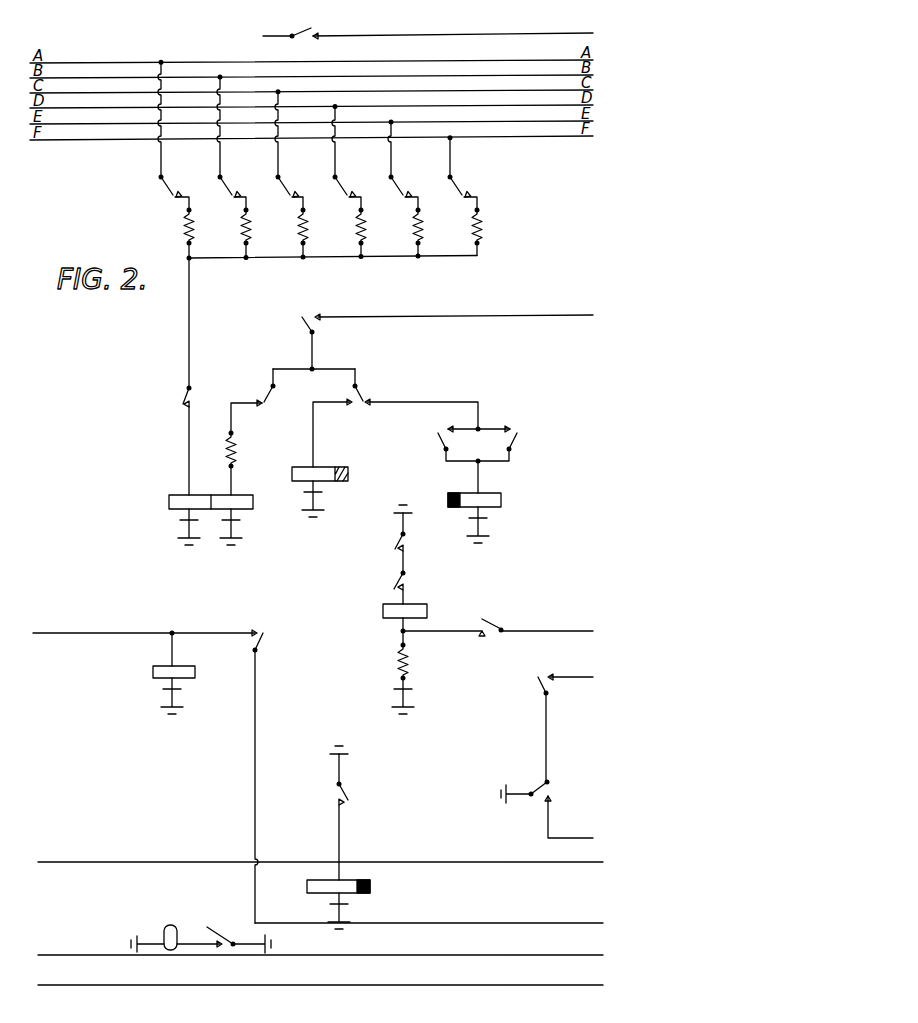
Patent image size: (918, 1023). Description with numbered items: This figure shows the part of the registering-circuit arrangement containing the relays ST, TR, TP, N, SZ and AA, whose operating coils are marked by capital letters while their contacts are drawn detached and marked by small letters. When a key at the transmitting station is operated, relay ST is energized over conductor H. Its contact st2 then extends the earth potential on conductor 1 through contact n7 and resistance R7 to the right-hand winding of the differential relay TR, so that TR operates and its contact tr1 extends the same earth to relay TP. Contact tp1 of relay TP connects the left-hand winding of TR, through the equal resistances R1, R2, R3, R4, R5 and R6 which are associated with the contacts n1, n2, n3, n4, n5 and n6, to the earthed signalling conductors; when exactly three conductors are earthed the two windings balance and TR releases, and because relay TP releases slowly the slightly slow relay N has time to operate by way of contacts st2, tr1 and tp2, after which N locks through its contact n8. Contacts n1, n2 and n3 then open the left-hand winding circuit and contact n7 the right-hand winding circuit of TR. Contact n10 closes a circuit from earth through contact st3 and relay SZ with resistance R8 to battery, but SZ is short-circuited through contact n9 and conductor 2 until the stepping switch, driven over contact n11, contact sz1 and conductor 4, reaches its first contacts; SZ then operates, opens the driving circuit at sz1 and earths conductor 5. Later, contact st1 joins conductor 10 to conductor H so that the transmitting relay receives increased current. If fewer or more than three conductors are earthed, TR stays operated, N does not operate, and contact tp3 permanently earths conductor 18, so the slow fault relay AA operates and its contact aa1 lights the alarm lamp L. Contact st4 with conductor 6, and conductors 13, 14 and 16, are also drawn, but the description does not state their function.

The conductor 1 is at (456, 306).
The conductor 2 is at (547, 622).
The conductor 4 is at (571, 689).
The conductor 5 is at (571, 818).
The line 6 (output of switch st4) 6 is at (453, 25).
The conductor 10 is at (429, 913).
The line 13 is at (320, 975).
The line 14 is at (320, 861).
The line 16 is at (320, 945).
The conductor 18 is at (326, 842).
The contact n1 is at (163, 135).
The contact n2 is at (222, 142).
The contact n3 is at (279, 149).
The contact n4 is at (336, 157).
The contact n5 is at (393, 165).
The contact n6 is at (451, 172).
The contact n7 is at (253, 401).
The contact n8 is at (449, 433).
The contact n9 is at (453, 637).
The contact n10 is at (422, 587).
The contact n11 is at (557, 715).
The resistance R1 is at (201, 233).
The resistance R2 is at (258, 233).
The resistance R3 is at (315, 233).
The resistance R4 is at (373, 232).
The resistance R5 is at (430, 232).
The resistance R6 is at (489, 232).
The resistance R7 is at (244, 463).
The resistance R8 is at (393, 679).
The contact st1 is at (267, 759).
The contact st2 is at (312, 329).
The contact st3 is at (419, 539).
The contact st4 is at (310, 24).
The contact tp1 is at (166, 441).
The contact tp2 is at (513, 432).
The contact tp3 is at (361, 776).
The contact tr1 is at (395, 418).
The contact sz1 is at (524, 804).
The contact aa1 is at (232, 929).
The differential relay TR is at (162, 504).
The relay TP is at (374, 476).
The relay N is at (528, 502).
The relay SZ is at (379, 611).
The relay ST is at (144, 673).
The fault relay AA is at (414, 886).
The alarm lamp L is at (175, 925).
The conductor H is at (144, 627).